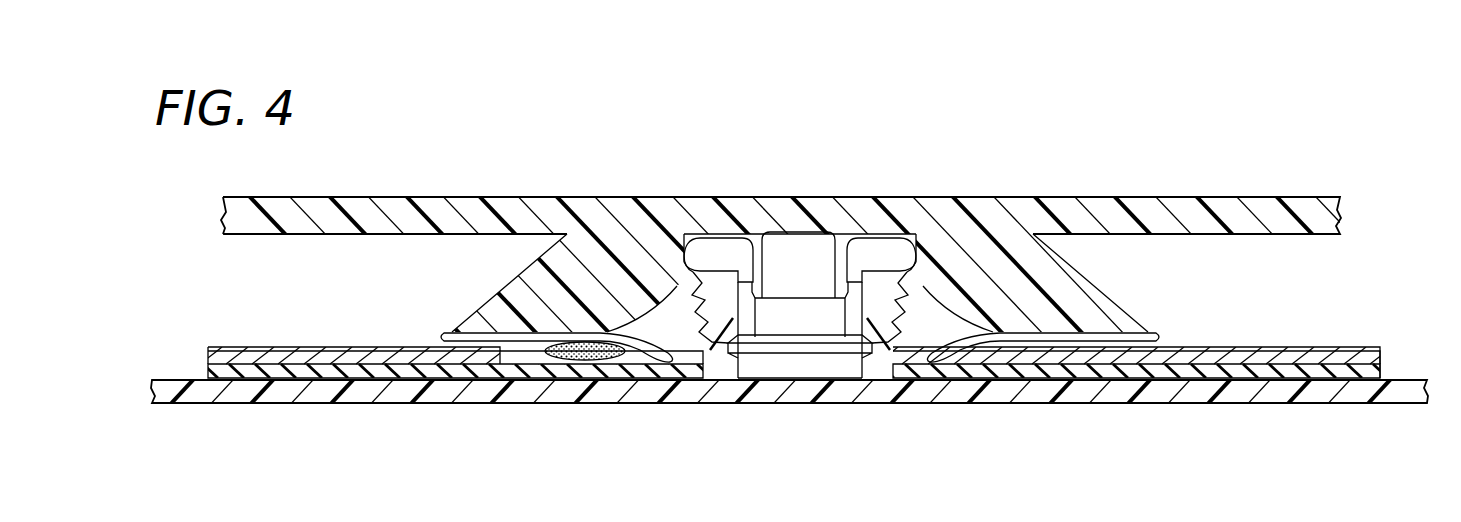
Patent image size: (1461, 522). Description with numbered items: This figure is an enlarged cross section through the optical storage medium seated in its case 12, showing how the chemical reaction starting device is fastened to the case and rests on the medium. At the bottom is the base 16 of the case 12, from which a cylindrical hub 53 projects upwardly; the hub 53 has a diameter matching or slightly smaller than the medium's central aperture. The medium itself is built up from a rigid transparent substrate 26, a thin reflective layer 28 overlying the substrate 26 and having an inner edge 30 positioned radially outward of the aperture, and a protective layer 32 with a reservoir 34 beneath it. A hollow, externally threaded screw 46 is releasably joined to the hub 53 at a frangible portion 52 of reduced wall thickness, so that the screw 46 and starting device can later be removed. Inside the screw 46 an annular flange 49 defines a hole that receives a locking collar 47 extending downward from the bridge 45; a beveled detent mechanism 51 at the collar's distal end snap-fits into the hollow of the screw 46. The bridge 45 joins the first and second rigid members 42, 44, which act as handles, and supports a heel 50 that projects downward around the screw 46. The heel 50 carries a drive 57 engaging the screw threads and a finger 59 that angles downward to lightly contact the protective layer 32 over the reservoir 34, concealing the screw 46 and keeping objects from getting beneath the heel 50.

The case 12 is at (1412, 380).
The base 16 is at (1040, 387).
The substrate 26 is at (455, 375).
The reflective layer 28 is at (295, 357).
The inner edge 30 is at (515, 378).
The protective layer 32 is at (260, 348).
The reservoir 34 is at (597, 360).
The first rigid member 42 is at (400, 200).
The second rigid member 44 is at (1210, 198).
The bridge 45 is at (817, 210).
The screw 46 is at (878, 332).
The locking collar 47 is at (880, 225).
The annular flange 49 is at (738, 268).
The heel 50 is at (596, 287).
The detent mechanism 51 is at (845, 298).
The frangible portion 52 is at (712, 353).
The hub 53 is at (718, 360).
The drive 57 is at (693, 278).
The finger 59 is at (457, 333).